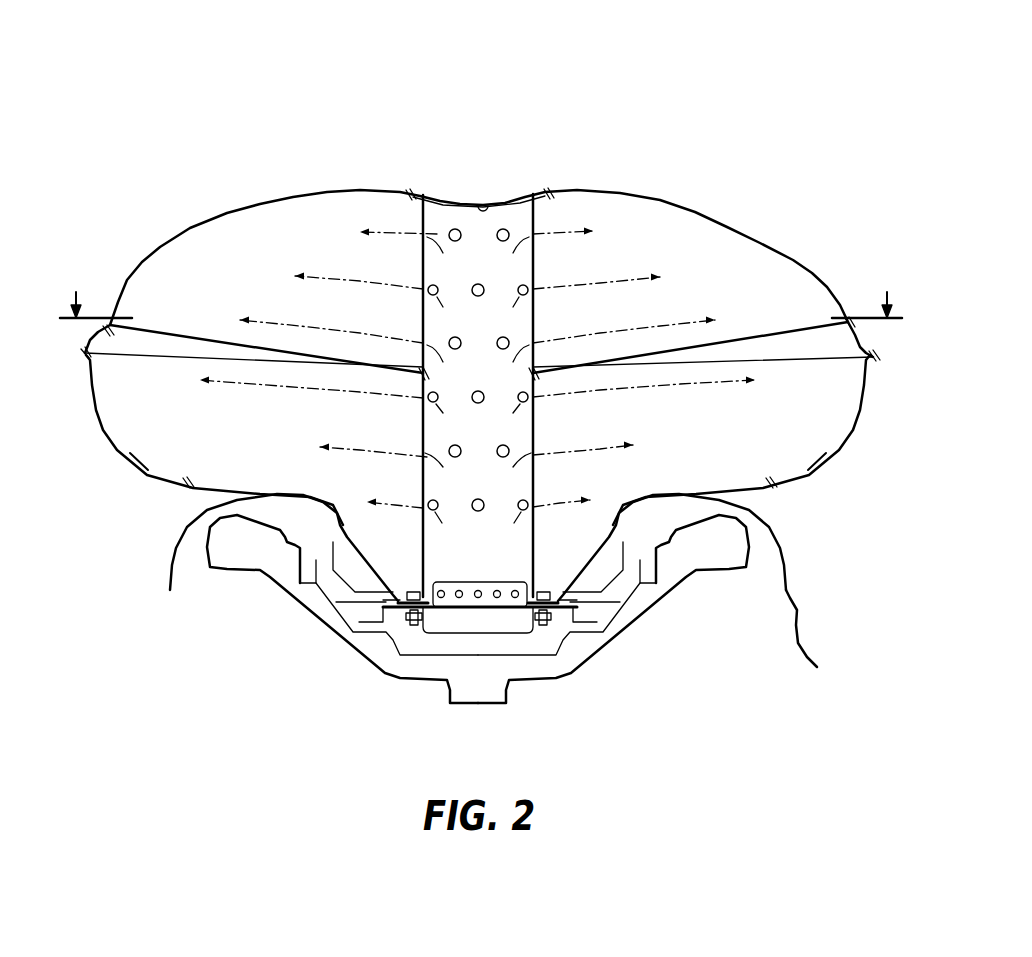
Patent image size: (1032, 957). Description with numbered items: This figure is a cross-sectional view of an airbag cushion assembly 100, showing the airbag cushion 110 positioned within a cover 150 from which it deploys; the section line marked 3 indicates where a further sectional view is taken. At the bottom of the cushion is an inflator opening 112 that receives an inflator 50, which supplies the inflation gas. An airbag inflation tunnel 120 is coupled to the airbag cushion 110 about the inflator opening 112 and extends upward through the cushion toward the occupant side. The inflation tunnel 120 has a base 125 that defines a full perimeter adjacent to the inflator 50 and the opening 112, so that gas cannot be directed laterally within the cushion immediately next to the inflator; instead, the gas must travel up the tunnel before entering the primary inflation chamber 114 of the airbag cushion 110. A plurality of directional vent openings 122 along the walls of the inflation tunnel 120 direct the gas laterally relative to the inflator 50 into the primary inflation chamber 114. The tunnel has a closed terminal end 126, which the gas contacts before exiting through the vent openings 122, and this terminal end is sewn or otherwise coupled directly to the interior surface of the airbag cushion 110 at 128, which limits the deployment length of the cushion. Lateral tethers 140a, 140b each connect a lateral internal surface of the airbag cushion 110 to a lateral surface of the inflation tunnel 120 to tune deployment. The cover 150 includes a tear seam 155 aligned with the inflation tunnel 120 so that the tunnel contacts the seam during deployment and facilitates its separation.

The airbag cushion assembly 100 is at (481, 375).
The airbag cushion 110 is at (480, 266).
The primary inflation chamber 114 is at (478, 324).
The airbag inflation tunnel 120 is at (489, 376).
The directional vent openings 122 is at (444, 282).
The closed terminal end 126 is at (500, 120).
The coupling location of terminal end to cushion 128 is at (520, 118).
The lateral tether 140a is at (714, 296).
The lateral tether 140b is at (256, 299).
The cover 150 is at (522, 597).
The tear seam 155 is at (816, 641).
The base 125 is at (549, 649).
The inflator 50 is at (528, 660).
The inflator opening 112 is at (428, 662).
The section line 3- 3 is at (481, 289).